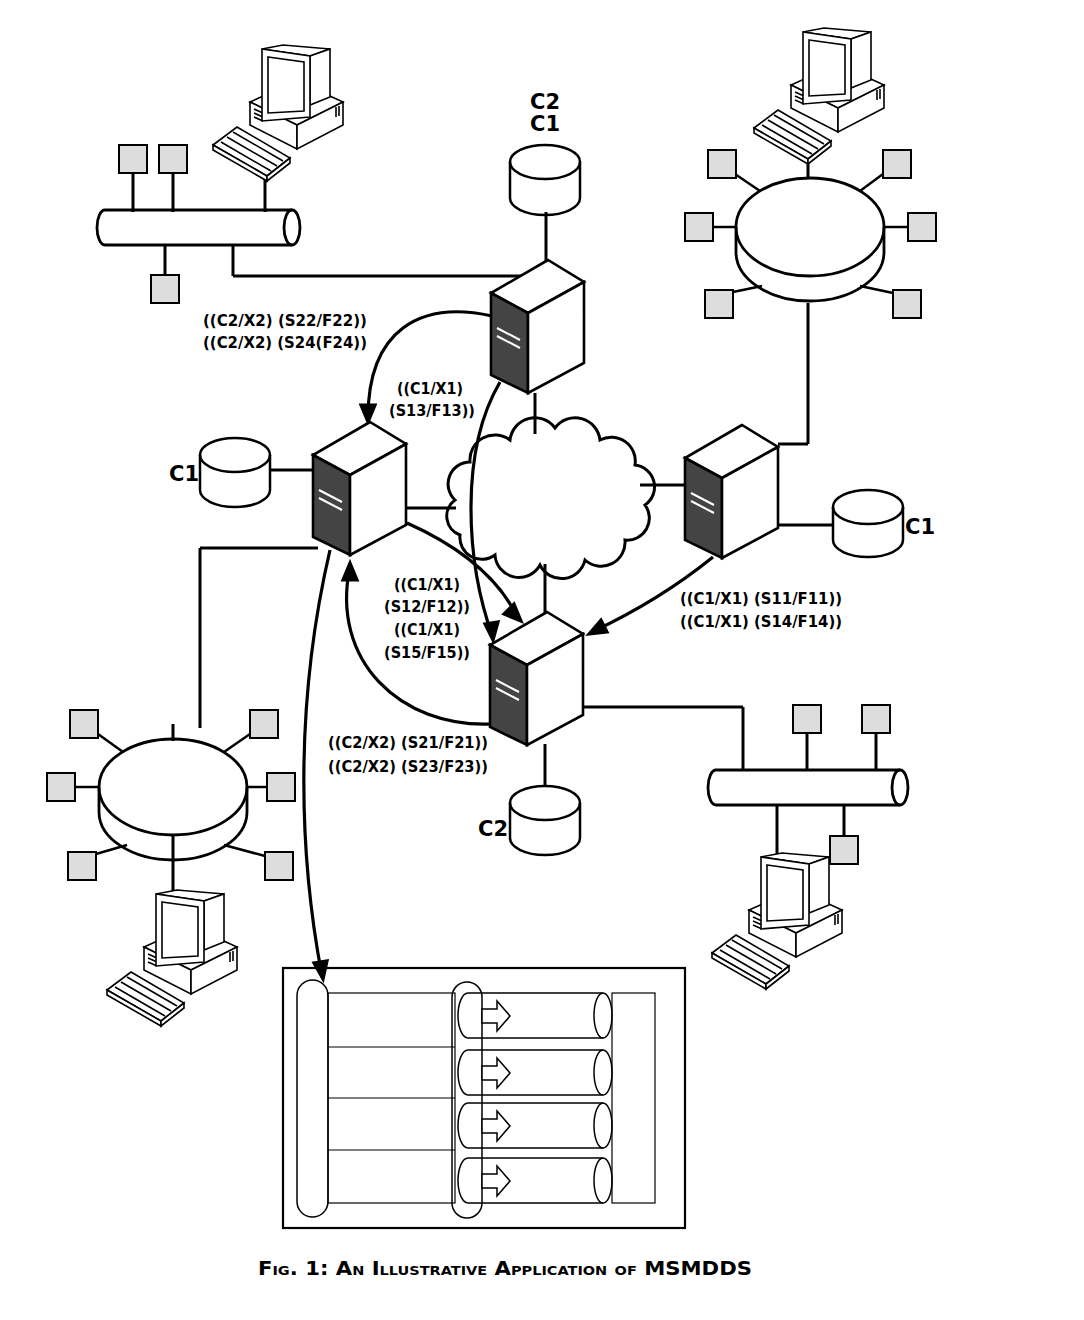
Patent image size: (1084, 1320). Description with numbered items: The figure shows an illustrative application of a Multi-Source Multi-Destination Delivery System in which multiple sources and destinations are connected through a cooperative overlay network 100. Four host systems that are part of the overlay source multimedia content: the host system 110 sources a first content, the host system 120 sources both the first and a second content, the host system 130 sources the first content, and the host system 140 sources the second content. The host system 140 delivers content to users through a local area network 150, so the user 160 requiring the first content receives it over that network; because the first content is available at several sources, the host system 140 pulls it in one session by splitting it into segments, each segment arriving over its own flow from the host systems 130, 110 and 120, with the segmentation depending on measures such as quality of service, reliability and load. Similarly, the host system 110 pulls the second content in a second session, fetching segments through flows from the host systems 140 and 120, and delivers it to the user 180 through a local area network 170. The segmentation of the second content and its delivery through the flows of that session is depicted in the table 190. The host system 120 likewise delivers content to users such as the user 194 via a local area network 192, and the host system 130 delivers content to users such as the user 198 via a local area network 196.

The cooperative overlay network (CON) 100 is at (622, 442).
The host system 110 is at (324, 447).
The host system 120 is at (587, 301).
The host system 130 is at (780, 485).
The host system 140 is at (587, 681).
The local area network 150 is at (709, 786).
The user 160 is at (755, 879).
The local area network 170 is at (155, 738).
The user 180 is at (240, 956).
The content segmentation and flow depiction 190 is at (688, 1084).
The local area network 192 is at (115, 248).
The user 194 is at (260, 63).
The local area network 196 is at (838, 303).
The user 198 is at (797, 45).